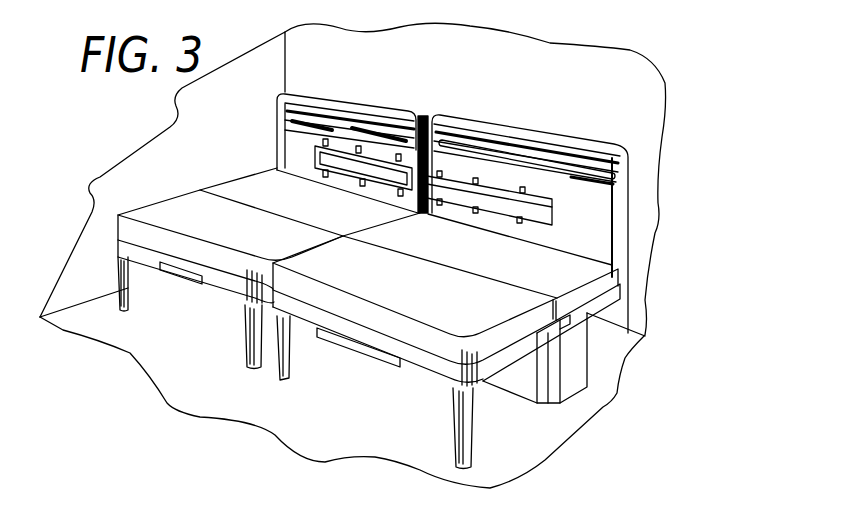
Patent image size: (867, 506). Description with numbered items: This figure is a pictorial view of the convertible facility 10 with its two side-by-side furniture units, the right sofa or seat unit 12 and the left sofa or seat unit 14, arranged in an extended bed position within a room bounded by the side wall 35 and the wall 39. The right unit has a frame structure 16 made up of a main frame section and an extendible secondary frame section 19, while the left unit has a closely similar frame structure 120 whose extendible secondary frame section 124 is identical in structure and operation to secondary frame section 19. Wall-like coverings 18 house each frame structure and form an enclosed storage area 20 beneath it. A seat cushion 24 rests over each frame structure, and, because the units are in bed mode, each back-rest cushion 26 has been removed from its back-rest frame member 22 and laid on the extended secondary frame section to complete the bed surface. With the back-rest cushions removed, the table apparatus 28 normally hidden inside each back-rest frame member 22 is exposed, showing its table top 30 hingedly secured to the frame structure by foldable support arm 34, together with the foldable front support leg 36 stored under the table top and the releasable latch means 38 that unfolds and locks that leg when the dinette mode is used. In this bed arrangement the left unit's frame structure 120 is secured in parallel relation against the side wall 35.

The convertible facility 10 is at (630, 127).
The right sofa or seat unit 12 is at (578, 265).
The left sofa or seat unit 14 is at (182, 183).
The frame structure 16 is at (611, 299).
The wall-like coverings 18 is at (523, 390).
The extendible secondary frame section 19 is at (408, 363).
The enclosed storage area 20 is at (601, 341).
The back-rest frame member 22 is at (383, 100).
The seat cushion 24 is at (238, 235).
The back-rest cushion 26 is at (318, 213).
The table apparatus 28 is at (300, 151).
The table top 30 is at (348, 135).
The foldable support arm 34 is at (422, 213).
The side wall 35 is at (442, 43).
The foldable front support leg 36 is at (388, 132).
The releasable latch means 38 is at (292, 125).
The wall 39 is at (247, 67).
The frame structure 120 is at (109, 247).
The extendible secondary frame section 124 is at (220, 292).